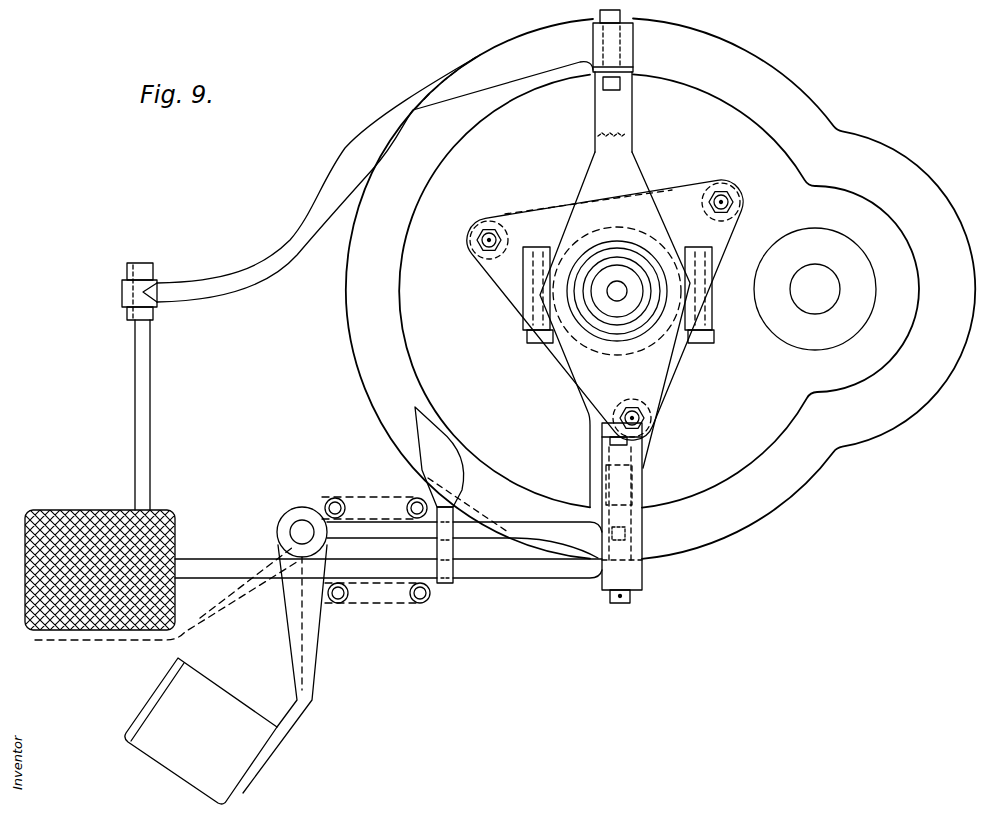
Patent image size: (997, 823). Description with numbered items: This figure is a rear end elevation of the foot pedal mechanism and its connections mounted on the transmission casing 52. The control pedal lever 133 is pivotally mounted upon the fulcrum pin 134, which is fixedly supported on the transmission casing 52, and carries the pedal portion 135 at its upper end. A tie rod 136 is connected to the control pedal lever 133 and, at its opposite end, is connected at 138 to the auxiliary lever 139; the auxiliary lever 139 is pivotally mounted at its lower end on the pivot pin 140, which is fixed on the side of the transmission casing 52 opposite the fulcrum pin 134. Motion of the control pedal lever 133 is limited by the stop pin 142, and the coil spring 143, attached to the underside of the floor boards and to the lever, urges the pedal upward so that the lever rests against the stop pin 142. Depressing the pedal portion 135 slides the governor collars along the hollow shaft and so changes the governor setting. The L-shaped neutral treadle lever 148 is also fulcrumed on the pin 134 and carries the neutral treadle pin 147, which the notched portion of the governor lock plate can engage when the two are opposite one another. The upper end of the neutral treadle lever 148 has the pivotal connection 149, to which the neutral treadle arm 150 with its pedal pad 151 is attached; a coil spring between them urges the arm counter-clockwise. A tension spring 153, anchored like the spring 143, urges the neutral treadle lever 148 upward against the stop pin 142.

The transmission casing 52 is at (714, 116).
The control pedal lever 133 is at (508, 579).
The fulcrum pin 134 is at (613, 604).
The pedal portion 135 is at (102, 496).
The tie rod 136 is at (143, 360).
The connection of tie rod to auxiliary lever 138 is at (151, 275).
The auxiliary lever 139 is at (238, 282).
The pivot pin 140 is at (628, 14).
The stop pin 142 is at (450, 584).
The coil spring 143 is at (421, 604).
The neutral treadle pin 147 is at (620, 490).
The neutral treadle lever 148 is at (538, 507).
The pivotal connection 149 is at (303, 521).
The neutral treadle arm 150 is at (297, 694).
The pedal pad 151 is at (155, 712).
The tension spring 153 is at (337, 499).